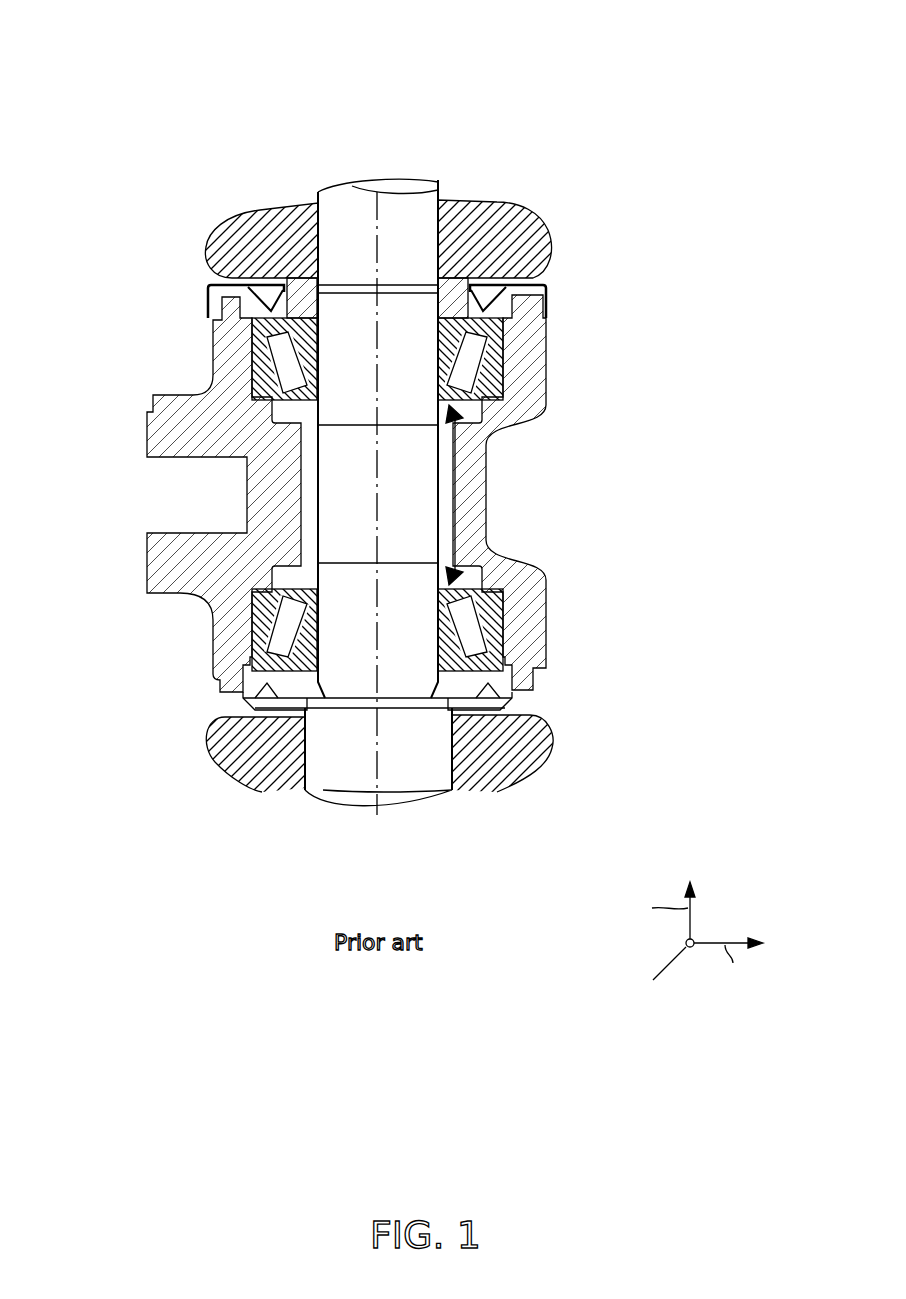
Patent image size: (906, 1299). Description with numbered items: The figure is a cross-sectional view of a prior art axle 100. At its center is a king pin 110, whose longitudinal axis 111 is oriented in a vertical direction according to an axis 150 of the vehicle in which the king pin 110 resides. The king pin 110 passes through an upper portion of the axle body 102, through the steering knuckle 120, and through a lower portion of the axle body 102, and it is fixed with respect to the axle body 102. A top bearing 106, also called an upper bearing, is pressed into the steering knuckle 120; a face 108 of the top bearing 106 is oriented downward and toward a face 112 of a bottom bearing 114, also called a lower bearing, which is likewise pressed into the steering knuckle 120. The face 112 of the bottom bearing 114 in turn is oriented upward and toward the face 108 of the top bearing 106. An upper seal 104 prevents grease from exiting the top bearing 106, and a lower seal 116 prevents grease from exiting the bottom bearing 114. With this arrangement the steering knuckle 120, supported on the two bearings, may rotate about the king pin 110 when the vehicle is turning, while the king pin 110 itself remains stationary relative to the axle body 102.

The axle 100 is at (128, 38).
The axle body 102 is at (540, 236).
The upper seal 104 is at (488, 305).
The top bearing 106 is at (483, 344).
The face of top bearing 108 is at (452, 408).
The king pin 110 is at (418, 496).
The longitudinal axis 111 is at (378, 478).
The face of bottom bearing 112 is at (452, 583).
The bottom bearing 114 is at (470, 624).
The lower seal 116 is at (507, 698).
The steering knuckle 120 is at (223, 380).
The axis 150 is at (626, 860).